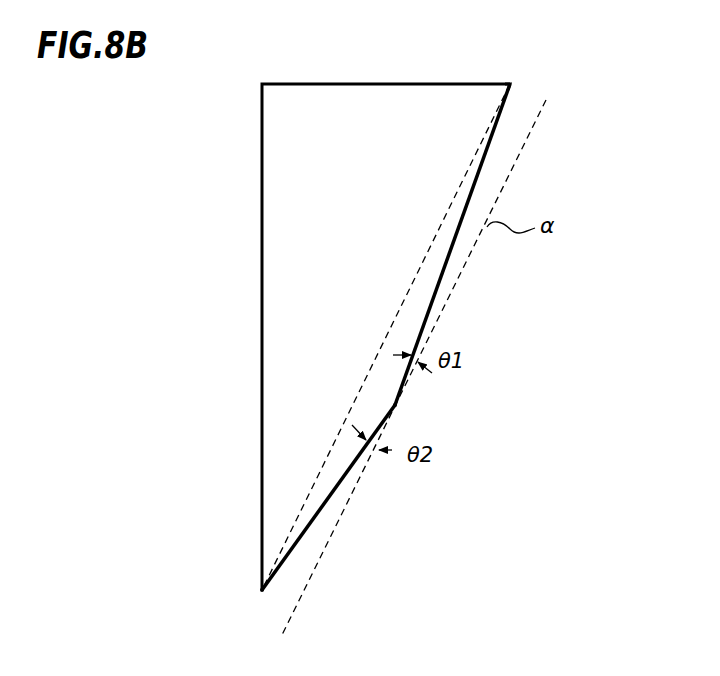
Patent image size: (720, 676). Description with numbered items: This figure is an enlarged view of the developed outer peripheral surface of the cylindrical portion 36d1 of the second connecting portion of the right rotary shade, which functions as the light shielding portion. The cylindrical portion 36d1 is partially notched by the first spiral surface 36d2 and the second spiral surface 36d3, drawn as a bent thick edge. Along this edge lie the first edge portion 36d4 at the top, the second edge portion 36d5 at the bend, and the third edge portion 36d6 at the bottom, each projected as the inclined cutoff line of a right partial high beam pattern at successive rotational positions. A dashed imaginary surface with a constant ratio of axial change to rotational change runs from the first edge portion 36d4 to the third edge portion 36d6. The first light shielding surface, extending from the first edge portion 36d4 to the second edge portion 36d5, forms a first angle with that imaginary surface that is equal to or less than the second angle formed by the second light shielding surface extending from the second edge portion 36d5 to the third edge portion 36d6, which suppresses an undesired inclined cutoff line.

The cylindrical portion 36d1 is at (293, 188).
The first spiral surface 36d2 is at (328, 503).
The second spiral surface 36d3 is at (478, 188).
The first edge portion 36d4 is at (510, 84).
The second edge portion 36d5 is at (396, 405).
The third edge portion 36d6 is at (263, 591).